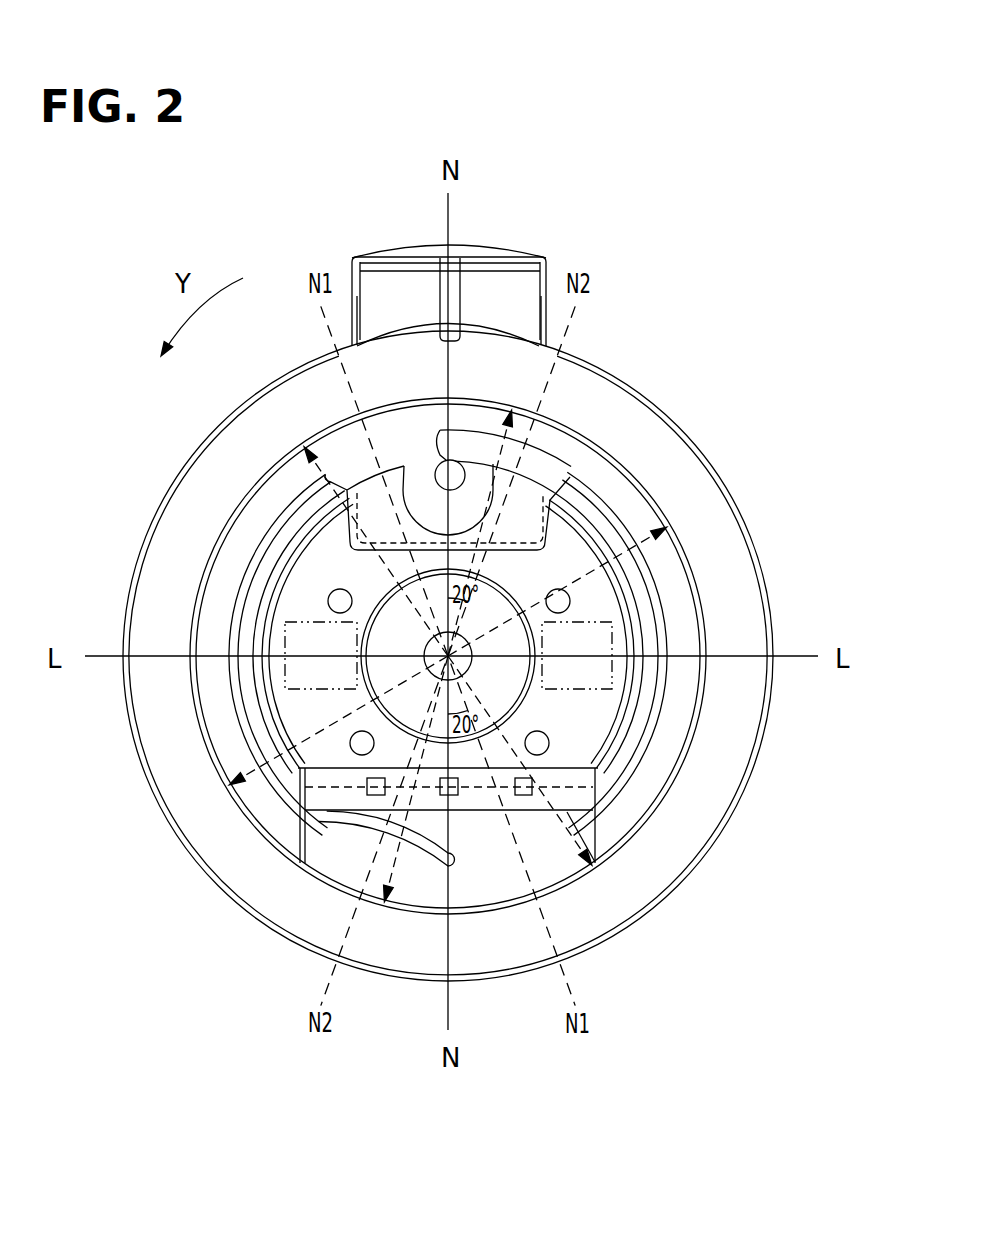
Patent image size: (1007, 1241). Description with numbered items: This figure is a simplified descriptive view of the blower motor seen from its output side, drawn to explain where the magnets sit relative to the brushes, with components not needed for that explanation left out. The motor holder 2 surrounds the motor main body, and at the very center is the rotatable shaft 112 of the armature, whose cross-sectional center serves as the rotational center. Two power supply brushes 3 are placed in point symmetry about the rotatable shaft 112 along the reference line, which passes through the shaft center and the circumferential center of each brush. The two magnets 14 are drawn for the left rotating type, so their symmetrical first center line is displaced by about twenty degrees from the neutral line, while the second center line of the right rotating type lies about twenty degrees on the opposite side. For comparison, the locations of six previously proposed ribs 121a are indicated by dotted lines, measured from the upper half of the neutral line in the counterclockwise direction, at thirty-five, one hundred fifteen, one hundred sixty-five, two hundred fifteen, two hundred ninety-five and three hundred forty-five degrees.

The motor holder 2 is at (613, 447).
The power supply brushes 3 is at (285, 622).
The magnets 14 is at (267, 558).
The rotatable shaft 112 is at (432, 665).
The ribs 121a is at (513, 406).